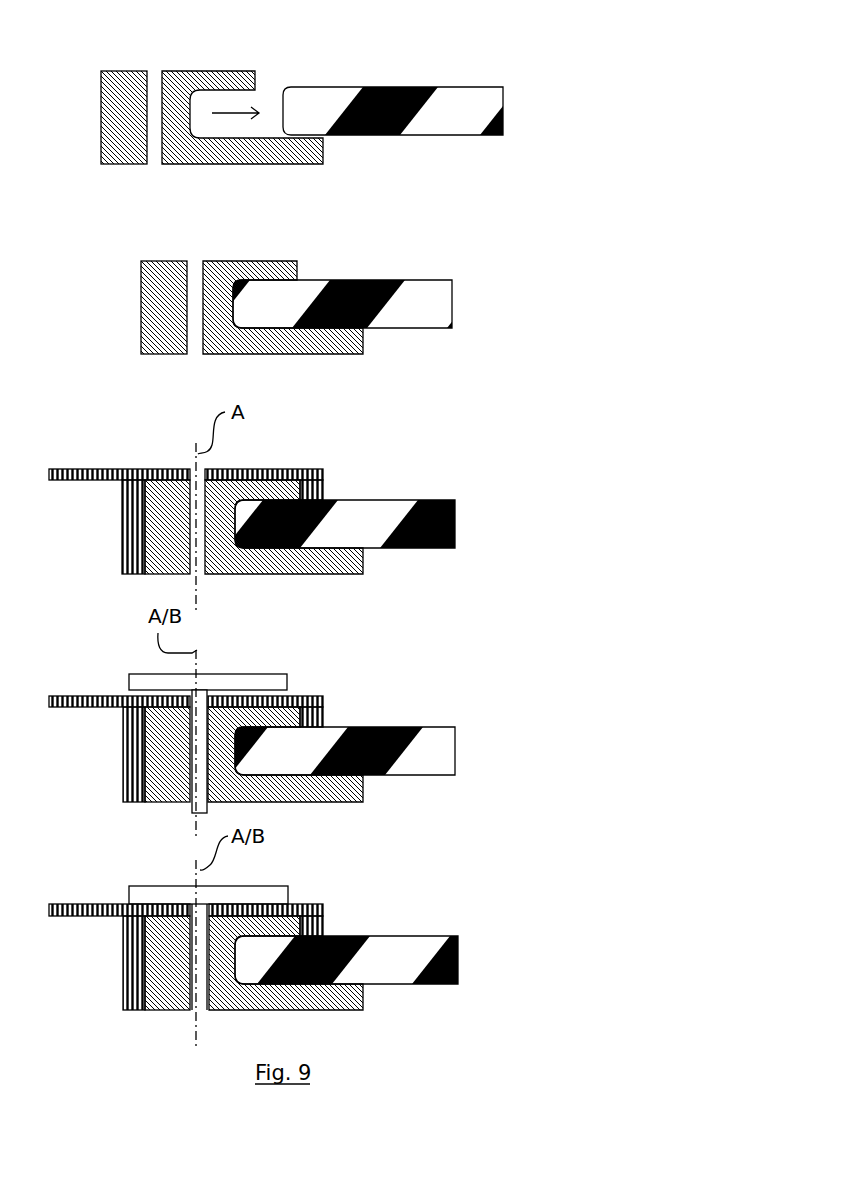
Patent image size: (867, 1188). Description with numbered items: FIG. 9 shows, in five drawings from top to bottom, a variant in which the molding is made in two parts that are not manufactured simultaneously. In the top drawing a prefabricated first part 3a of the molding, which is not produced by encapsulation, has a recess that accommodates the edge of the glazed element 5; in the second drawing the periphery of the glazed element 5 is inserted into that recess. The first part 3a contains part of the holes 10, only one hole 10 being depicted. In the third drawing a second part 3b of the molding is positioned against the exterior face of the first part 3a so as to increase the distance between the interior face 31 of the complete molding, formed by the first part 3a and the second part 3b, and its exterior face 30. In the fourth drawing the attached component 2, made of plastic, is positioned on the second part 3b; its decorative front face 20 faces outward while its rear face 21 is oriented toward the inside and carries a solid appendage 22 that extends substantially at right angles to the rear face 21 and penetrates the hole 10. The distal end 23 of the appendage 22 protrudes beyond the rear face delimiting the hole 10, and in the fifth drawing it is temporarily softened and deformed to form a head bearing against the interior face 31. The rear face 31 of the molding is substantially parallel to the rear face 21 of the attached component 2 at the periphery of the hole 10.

The attached component 2 is at (275, 683).
The first part of the molding 3a is at (107, 135).
The second part of the molding 3b is at (325, 488).
The glazed element 5 is at (468, 125).
The hole 10 is at (140, 98).
The front face 20 is at (230, 842).
The rear face 21 is at (150, 683).
The appendage 22 is at (200, 750).
The distal end 23 is at (198, 815).
The exterior face 30 is at (230, 71).
The interior face 31 is at (255, 164).